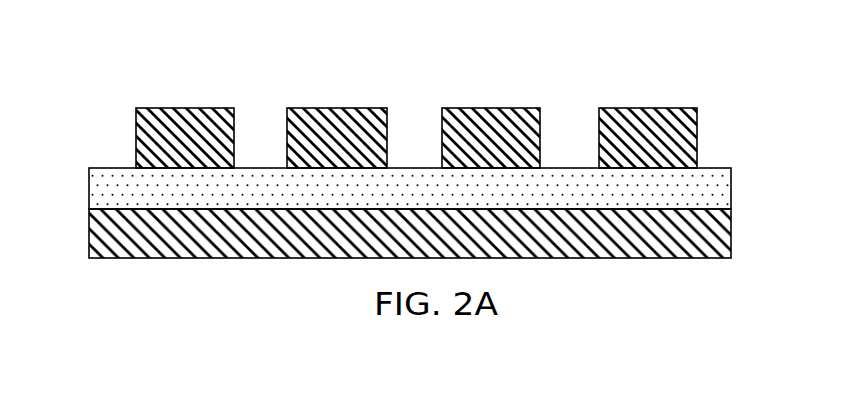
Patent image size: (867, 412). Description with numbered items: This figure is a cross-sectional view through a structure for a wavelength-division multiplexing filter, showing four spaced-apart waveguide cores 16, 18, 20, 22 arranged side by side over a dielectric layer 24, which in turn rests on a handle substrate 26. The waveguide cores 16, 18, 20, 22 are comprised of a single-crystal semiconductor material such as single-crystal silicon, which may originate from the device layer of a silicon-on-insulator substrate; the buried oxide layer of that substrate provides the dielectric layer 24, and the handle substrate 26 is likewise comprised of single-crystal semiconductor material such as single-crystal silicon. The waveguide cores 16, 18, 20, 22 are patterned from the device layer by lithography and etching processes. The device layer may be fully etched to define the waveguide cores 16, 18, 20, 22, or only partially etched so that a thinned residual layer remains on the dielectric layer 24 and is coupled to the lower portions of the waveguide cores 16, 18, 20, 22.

The waveguide core 16 is at (672, 131).
The waveguide core 18 is at (500, 120).
The waveguide core 20 is at (312, 115).
The waveguide core 22 is at (158, 137).
The dielectric layer 24 is at (122, 195).
The handle substrate 26 is at (117, 243).